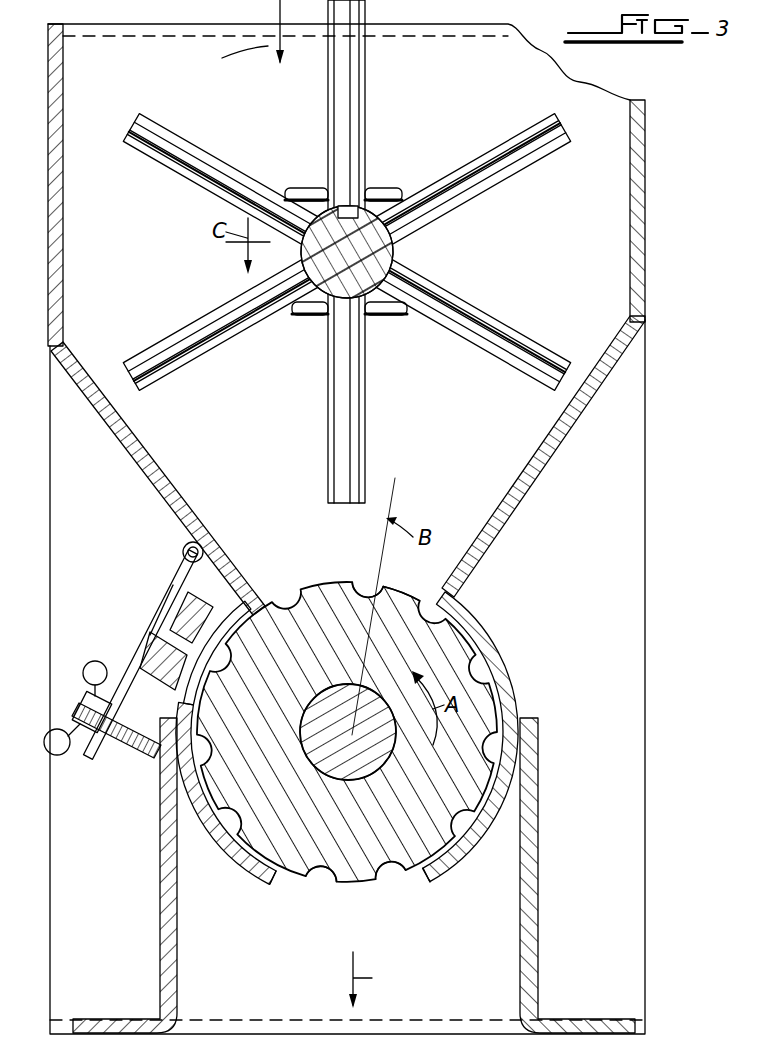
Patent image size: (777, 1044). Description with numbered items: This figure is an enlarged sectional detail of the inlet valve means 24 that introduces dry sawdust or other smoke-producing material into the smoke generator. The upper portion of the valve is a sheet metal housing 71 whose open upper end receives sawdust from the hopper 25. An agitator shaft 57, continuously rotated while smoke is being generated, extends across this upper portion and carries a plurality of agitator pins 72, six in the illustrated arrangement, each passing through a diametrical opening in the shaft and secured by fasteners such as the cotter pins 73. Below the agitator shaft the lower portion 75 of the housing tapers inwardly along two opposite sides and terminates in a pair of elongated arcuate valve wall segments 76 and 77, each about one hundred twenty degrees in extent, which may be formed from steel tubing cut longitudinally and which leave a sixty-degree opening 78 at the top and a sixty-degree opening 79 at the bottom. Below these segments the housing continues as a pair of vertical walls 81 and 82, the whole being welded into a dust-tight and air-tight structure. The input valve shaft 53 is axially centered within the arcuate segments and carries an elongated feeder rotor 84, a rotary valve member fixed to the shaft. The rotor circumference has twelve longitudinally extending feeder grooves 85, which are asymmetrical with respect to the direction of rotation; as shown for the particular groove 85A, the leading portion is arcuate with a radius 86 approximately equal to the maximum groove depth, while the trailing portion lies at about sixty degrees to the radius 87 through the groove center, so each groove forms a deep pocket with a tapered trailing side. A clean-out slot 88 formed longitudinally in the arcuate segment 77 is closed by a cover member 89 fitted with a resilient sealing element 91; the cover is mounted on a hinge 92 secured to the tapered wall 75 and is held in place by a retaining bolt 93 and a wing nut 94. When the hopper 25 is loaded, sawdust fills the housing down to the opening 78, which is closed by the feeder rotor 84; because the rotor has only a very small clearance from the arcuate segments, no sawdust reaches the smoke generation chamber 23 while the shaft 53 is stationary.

The smoke generation chamber 23 is at (430, 983).
The inlet valve means 24 is at (660, 395).
The hopper 25 is at (211, 55).
The input valve shaft 53 is at (346, 775).
The agitator shaft 57 is at (392, 257).
The sheet metal housing 71 is at (642, 136).
The agitator pins 72 is at (358, 130).
The cotter pins 73 is at (372, 186).
The lower portion of housing 75 is at (197, 512).
The arcuate valve wall segment 76 is at (478, 622).
The arcuate valve wall segment 77 is at (227, 858).
The opening 78 is at (322, 583).
The opening 79 is at (331, 893).
The vertical wall 81 is at (540, 858).
The vertical wall 82 is at (160, 888).
The feeder rotor 84 is at (388, 882).
The feeder grooves 85 is at (322, 880).
The feeder groove 85A is at (448, 572).
The radius 86 is at (369, 596).
The radius 87 is at (391, 505).
The clean-out slot 88 is at (214, 630).
The cover member 89 is at (170, 680).
The resilient sealing element 91 is at (172, 700).
The hinge 92 is at (185, 572).
The retaining bolt 93 is at (148, 765).
The wing nut 94 is at (96, 661).